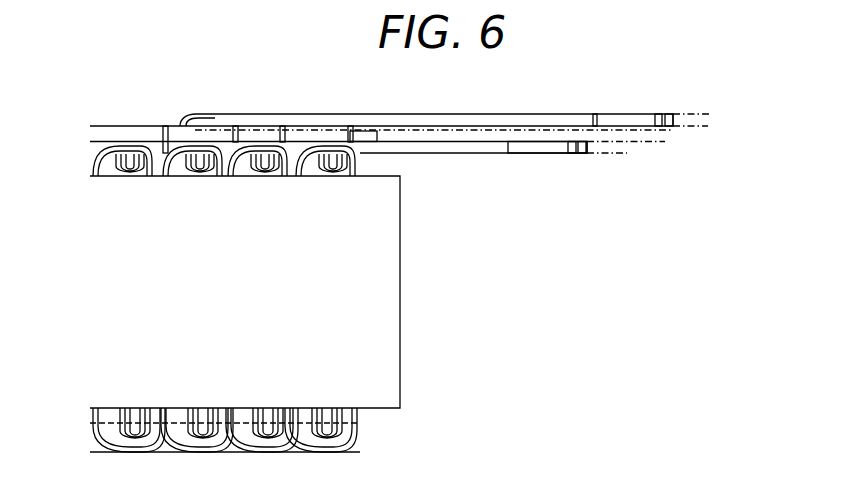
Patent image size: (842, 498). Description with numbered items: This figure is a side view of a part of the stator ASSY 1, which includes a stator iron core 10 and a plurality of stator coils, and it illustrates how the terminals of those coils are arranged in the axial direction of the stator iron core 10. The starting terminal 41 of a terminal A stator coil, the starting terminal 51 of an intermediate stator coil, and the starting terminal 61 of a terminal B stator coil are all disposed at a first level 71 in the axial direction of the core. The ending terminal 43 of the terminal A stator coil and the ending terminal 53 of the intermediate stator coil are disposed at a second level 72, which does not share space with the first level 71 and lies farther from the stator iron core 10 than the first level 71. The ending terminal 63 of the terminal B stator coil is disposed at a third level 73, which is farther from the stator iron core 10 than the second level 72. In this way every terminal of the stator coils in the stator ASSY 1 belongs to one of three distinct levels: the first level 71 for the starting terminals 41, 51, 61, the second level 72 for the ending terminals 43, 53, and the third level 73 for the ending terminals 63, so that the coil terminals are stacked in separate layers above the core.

The stator ASSY 1 is at (298, 314).
The stator iron core 10 is at (382, 335).
The starting terminal of terminal A stator coil 41 is at (580, 153).
The ending terminal of terminal A stator coil 43 is at (362, 133).
The starting terminal of intermediate stator coil 51 is at (147, 148).
The ending terminal of intermediate stator coil 53 is at (97, 163).
The starting terminal of terminal B stator coil 61 is at (327, 147).
The ending terminal of terminal B stator coil 63 is at (669, 113).
The first level 71 is at (627, 152).
The second level 72 is at (667, 137).
The third level 73 is at (712, 117).